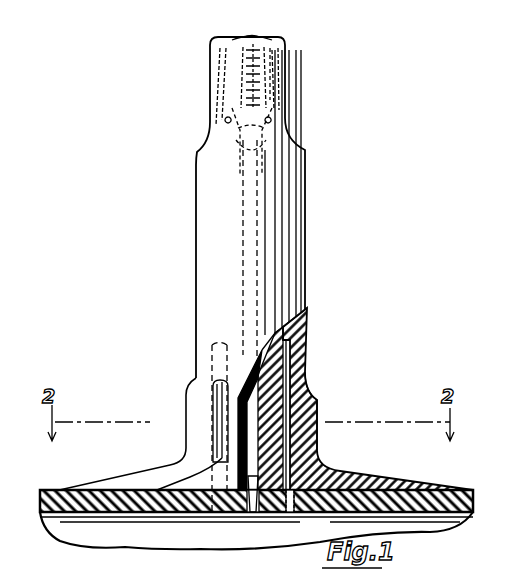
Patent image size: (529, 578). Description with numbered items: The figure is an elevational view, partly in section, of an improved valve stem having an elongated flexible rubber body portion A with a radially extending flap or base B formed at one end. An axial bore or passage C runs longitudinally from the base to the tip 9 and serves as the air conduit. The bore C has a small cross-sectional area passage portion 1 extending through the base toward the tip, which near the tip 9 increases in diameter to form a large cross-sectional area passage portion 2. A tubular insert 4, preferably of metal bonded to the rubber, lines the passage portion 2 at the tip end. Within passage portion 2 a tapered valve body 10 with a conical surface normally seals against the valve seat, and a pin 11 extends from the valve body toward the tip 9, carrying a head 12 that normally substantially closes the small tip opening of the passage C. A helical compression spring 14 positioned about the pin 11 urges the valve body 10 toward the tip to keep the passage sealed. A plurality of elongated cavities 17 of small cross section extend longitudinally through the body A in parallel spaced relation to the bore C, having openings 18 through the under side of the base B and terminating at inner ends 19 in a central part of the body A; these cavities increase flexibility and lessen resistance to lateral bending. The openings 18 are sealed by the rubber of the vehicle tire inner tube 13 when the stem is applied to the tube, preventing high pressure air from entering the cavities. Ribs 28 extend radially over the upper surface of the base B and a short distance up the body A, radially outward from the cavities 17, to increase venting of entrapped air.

The small cross-sectional area passage portion 1 is at (243, 323).
The large cross-sectional area passage portion 2 is at (272, 148).
The tubular insert 4 is at (228, 99).
The tip 9 is at (281, 40).
The tapered valve body 10 is at (246, 138).
The pin 11 is at (235, 75).
The head 12 is at (250, 37).
The vehicle tire inner tube 13 is at (208, 513).
The helical compression spring 14 is at (262, 74).
The elongated cavities 17 is at (305, 363).
The openings 18 is at (291, 513).
The inner ends of cavities 19 is at (290, 347).
The ribs 28 is at (317, 412).
The body portion A is at (196, 228).
The base B is at (373, 472).
The axial bore C is at (258, 297).